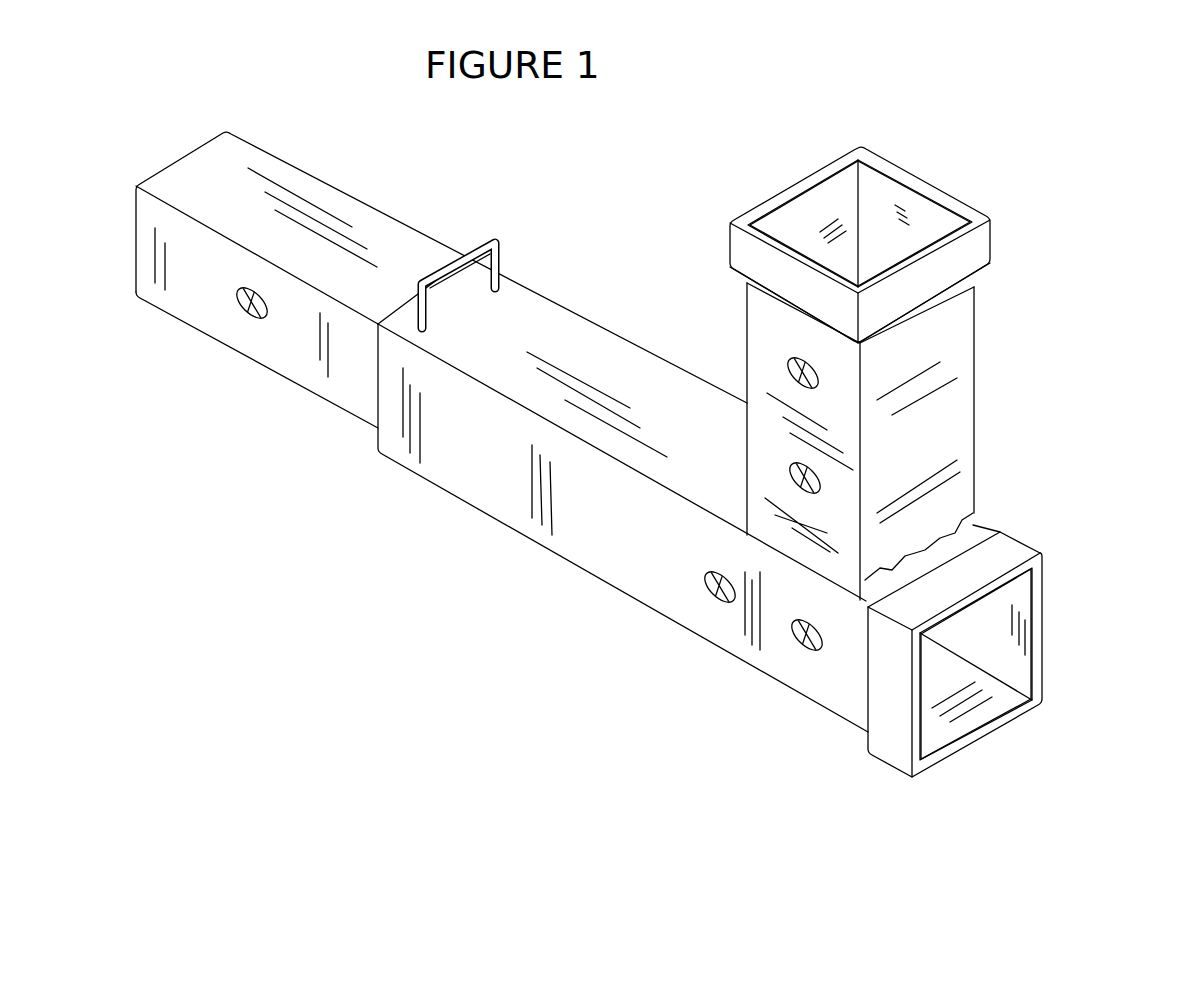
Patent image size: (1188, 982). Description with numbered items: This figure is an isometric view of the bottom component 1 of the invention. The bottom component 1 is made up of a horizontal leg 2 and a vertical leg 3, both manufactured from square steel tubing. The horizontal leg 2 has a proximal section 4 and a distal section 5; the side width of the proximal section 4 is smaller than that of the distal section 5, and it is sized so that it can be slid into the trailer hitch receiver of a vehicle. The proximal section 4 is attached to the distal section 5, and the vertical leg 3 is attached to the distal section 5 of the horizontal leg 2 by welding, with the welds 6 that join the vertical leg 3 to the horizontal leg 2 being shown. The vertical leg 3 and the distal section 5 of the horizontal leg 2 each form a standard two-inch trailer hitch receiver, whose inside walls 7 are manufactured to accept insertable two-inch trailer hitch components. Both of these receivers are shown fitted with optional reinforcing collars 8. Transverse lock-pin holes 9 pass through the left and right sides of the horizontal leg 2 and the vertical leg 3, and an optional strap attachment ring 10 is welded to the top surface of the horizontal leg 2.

The bottom component 1 is at (541, 273).
The horizontal leg 2 is at (833, 857).
The vertical leg 3 is at (1023, 227).
The proximal section 4 is at (99, 348).
The distal section 5 is at (890, 817).
The welds 6 is at (747, 530).
The inside walls 7 is at (832, 192).
The reinforcing collars 8 is at (978, 250).
The transverse lock-pin holes 9 is at (243, 303).
The strap attachment ring 10 is at (490, 243).